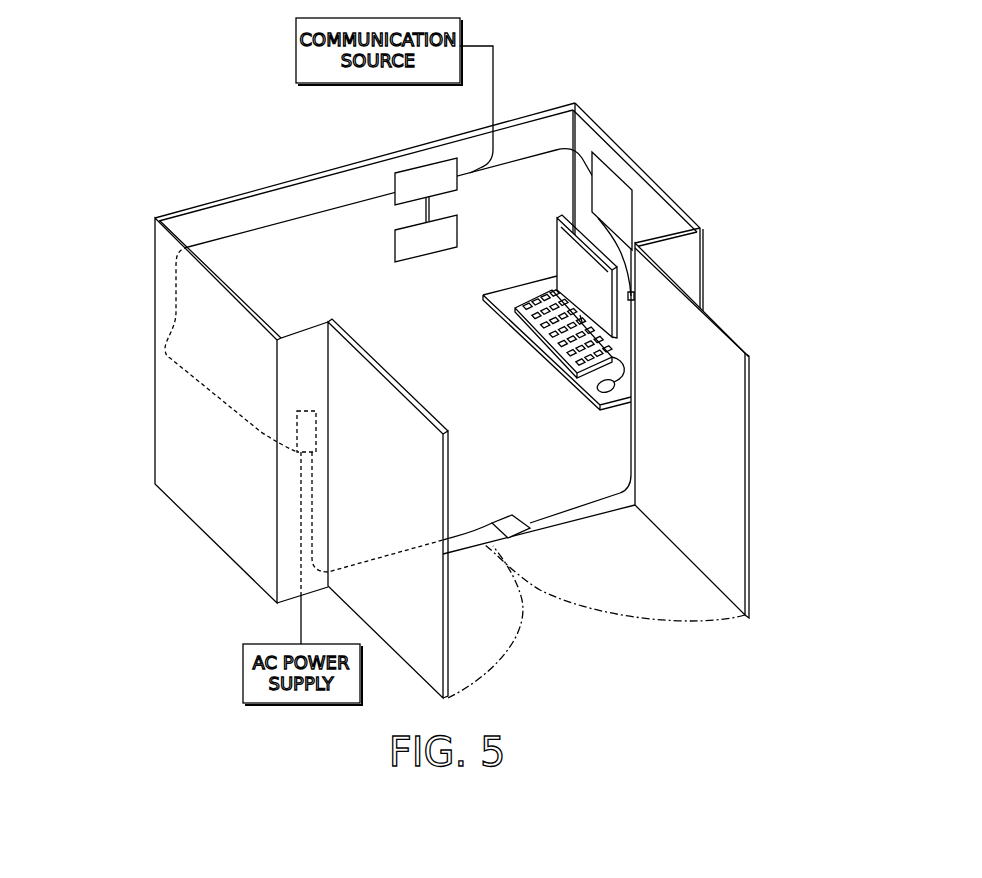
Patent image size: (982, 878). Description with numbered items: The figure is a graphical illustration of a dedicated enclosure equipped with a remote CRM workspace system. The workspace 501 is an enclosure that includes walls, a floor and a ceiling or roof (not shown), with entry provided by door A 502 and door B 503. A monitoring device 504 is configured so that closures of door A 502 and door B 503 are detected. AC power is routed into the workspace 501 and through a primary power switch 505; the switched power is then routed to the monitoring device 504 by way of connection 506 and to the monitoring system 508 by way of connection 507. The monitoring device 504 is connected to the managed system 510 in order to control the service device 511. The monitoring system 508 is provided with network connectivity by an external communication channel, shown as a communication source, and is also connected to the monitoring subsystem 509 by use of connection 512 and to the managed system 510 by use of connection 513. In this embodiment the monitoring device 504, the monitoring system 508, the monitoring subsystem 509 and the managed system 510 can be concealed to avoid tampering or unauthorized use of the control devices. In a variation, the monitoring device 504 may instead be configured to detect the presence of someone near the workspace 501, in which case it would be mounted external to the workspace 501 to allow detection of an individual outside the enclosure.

The workspace 501 is at (151, 282).
The door A 502 is at (700, 578).
The door B 503 is at (446, 638).
The monitoring device 504 is at (514, 514).
The primary power switch 505 is at (295, 455).
The connection 506 is at (360, 562).
The connection 507 is at (214, 388).
The monitoring system 508 is at (404, 168).
The monitoring subsystem 509 is at (388, 240).
The managed system 510 is at (612, 166).
The service device 511 is at (626, 297).
The connection 512 is at (431, 199).
The connection 513 is at (519, 160).